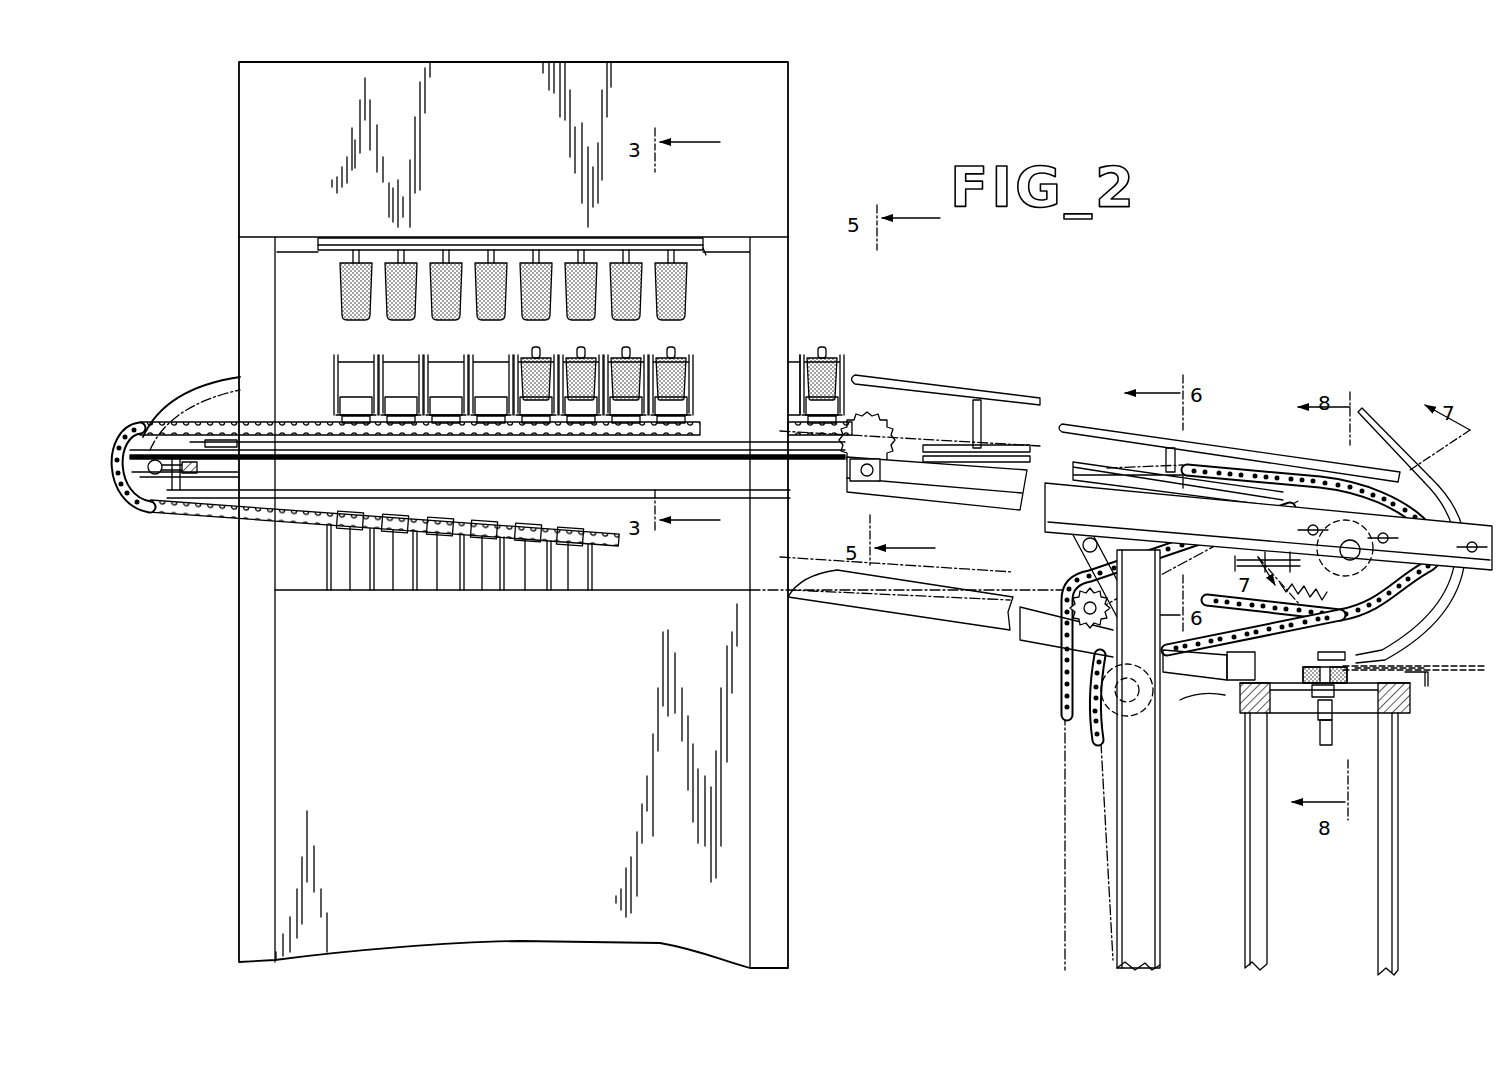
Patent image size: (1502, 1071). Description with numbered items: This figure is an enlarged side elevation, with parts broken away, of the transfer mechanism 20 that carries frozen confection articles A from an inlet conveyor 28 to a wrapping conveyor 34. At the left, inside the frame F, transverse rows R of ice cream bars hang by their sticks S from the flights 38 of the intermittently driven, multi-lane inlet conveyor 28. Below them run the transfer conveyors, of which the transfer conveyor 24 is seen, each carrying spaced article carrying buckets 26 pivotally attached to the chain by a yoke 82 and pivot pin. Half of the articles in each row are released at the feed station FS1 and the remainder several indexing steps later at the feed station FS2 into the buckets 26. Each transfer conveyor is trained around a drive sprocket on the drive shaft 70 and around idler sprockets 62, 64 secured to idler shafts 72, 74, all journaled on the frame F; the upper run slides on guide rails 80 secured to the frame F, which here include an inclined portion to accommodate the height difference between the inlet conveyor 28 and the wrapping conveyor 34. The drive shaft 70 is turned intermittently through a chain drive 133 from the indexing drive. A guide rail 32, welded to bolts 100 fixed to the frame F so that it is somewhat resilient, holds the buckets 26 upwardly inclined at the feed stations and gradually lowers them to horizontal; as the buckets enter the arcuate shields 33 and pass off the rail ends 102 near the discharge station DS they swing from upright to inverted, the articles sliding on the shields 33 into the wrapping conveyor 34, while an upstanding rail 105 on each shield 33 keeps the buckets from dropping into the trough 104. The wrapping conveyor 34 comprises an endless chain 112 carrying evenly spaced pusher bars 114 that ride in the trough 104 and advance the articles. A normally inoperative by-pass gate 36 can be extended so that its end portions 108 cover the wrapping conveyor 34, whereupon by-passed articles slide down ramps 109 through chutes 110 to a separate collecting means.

The frame F is at (783, 110).
The flights 38 is at (440, 248).
The transverse rows R is at (340, 287).
The sticks S is at (643, 262).
The inlet conveyor 28 is at (700, 262).
The articles A is at (530, 320).
The article carrying buckets 26 is at (395, 362).
The feed station FS1 is at (705, 352).
The feed station FS2 is at (320, 360).
The mechanism 20 is at (1030, 365).
The idler sprocket 62 is at (880, 428).
The bolts 100 is at (985, 433).
The guide rail 32 is at (1068, 430).
The arcuate shields 33 is at (1370, 405).
The ends of the rails 102 is at (1400, 475).
The idler shaft 72 is at (881, 478).
The guide rails 80 is at (540, 445).
The yoke 82 is at (425, 432).
The transfer conveyor 24 is at (492, 437).
The idler sprocket 64 is at (145, 437).
The idler shaft 74 is at (155, 475).
The drive shaft 70 is at (1350, 560).
The upstanding rail 105 is at (1440, 608).
The by-pass gate 36 is at (1470, 665).
The discharge station DS is at (1300, 662).
The chain drive 133 is at (1060, 675).
The chutes 110 is at (1173, 675).
The ramps 109 is at (1220, 700).
The trough 104 is at (1270, 690).
The wrapping conveyor 34 is at (1305, 715).
The pusher bars 114 is at (1322, 745).
The endless chain 112 is at (1332, 712).
The end portions 108 is at (1406, 673).